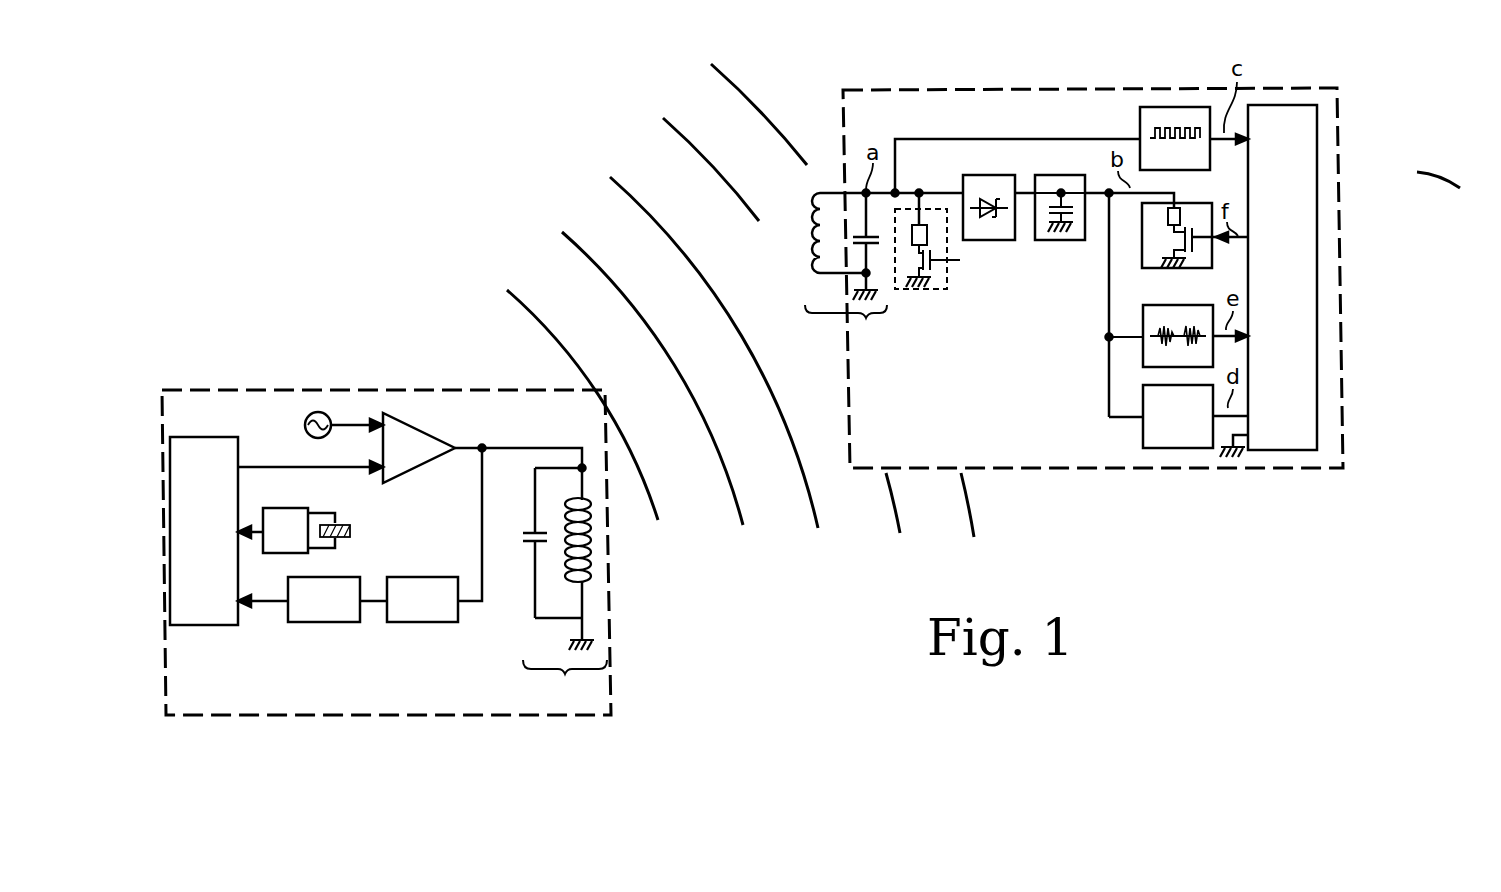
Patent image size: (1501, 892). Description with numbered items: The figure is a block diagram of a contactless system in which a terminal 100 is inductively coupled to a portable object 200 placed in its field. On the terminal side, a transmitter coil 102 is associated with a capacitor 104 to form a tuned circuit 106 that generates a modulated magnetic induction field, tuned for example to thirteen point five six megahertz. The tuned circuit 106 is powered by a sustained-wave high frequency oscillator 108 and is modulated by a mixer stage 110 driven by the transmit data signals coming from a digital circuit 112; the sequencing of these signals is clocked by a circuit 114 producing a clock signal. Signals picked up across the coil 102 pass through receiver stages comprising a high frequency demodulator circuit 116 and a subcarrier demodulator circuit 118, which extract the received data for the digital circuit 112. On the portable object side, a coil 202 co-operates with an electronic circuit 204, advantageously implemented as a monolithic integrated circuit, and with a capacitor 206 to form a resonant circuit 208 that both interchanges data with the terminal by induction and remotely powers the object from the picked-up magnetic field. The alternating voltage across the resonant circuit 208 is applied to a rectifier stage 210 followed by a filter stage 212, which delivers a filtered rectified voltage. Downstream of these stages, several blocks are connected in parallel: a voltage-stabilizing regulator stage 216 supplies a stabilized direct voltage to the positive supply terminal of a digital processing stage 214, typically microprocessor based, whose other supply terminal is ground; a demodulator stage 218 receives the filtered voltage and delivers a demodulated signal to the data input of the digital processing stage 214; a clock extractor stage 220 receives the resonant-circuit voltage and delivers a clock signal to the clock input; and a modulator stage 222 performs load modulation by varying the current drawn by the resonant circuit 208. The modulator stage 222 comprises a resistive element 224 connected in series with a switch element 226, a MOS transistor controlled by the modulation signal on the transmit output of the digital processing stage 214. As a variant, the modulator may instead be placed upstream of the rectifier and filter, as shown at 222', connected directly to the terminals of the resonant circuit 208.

The terminal 100 is at (275, 388).
The transmitter coil 102 is at (592, 548).
The capacitor 104 is at (527, 548).
The tuned circuit 106 is at (565, 584).
The sustained-wave high frequency oscillator 108 is at (305, 422).
The mixer stage 110 is at (427, 428).
The digital circuit 112 is at (212, 625).
The clock circuit 114 is at (272, 508).
The high frequency demodulator circuit 116 is at (427, 622).
The subcarrier demodulator circuit 118 is at (322, 622).
The portable object 200 is at (1013, 62).
The coil 202 is at (808, 240).
The electronic circuit 204 is at (838, 150).
The capacitor 206 is at (862, 232).
The resonant circuit 208 is at (846, 326).
The rectifier stage 210 is at (994, 242).
The filter stage 212 is at (1052, 243).
The digital processing stage 214 is at (1317, 178).
The voltage-stabilizing regulator stage 216 is at (1143, 400).
The demodulator stage 218 is at (1143, 322).
The clock extractor stage 220 is at (1155, 106).
The modulator stage 222 is at (1162, 264).
The modulator stage (upstream variant) 222' is at (928, 275).
The resistive element 224 is at (1154, 236).
The switch element 226 is at (1190, 218).